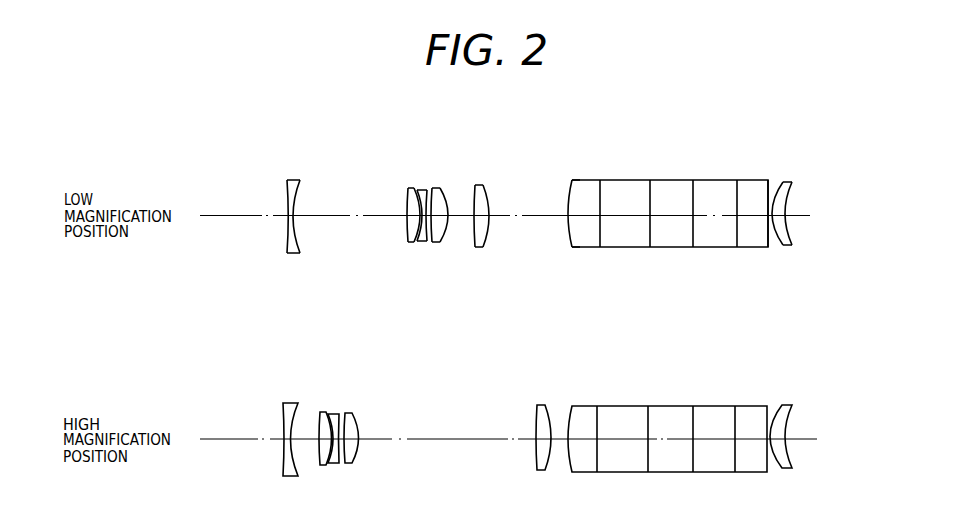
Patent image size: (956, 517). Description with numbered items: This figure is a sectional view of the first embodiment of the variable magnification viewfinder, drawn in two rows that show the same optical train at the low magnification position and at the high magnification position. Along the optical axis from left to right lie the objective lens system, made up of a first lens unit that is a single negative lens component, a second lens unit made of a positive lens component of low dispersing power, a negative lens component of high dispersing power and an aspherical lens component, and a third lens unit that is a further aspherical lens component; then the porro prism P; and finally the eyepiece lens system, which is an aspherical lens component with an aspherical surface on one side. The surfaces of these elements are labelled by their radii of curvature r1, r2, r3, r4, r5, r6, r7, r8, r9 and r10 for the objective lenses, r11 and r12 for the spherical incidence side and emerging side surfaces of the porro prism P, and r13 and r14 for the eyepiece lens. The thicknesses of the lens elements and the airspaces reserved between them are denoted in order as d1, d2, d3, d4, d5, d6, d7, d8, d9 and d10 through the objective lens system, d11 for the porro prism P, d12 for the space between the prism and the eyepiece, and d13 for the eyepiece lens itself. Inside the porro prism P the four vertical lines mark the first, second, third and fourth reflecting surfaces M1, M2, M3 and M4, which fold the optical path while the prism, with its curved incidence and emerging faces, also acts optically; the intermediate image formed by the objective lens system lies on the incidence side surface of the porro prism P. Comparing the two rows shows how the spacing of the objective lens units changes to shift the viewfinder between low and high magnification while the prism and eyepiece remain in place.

The lens thickness d1 is at (290, 213).
The airspace d2 is at (329, 213).
The lens thickness d3 is at (410, 213).
The airspace d4 is at (415, 205).
The lens thickness d5 is at (420, 208).
The airspace d6 is at (438, 208).
The lens thickness d7 is at (443, 210).
The airspace d8 is at (465, 210).
The lens thickness d9 is at (490, 210).
The airspace d10 is at (537, 212).
The prism thickness d11 is at (582, 213).
The airspace d12 is at (772, 210).
The lens thickness d13 is at (784, 210).
The radius of curvature r1 is at (288, 240).
The radius of curvature r2 is at (300, 238).
The radius of curvature r3 is at (408, 228).
The radius of curvature r4 is at (413, 235).
The radius of curvature r5 is at (422, 236).
The radius of curvature r6 is at (432, 238).
The radius of curvature r7 is at (442, 236).
The radius of curvature r8 is at (453, 238).
The radius of curvature r9 is at (473, 242).
The radius of curvature r10 is at (488, 238).
The radius of curvature r11 is at (571, 233).
The radius of curvature r12 is at (772, 243).
The radius of curvature r13 is at (778, 236).
The radius of curvature r14 is at (792, 236).
The first reflecting surface M1 is at (605, 193).
The second reflecting surface M2 is at (652, 193).
The third reflecting surface M3 is at (697, 193).
The fourth reflecting surface M4 is at (740, 192).
The porro prism P is at (664, 248).